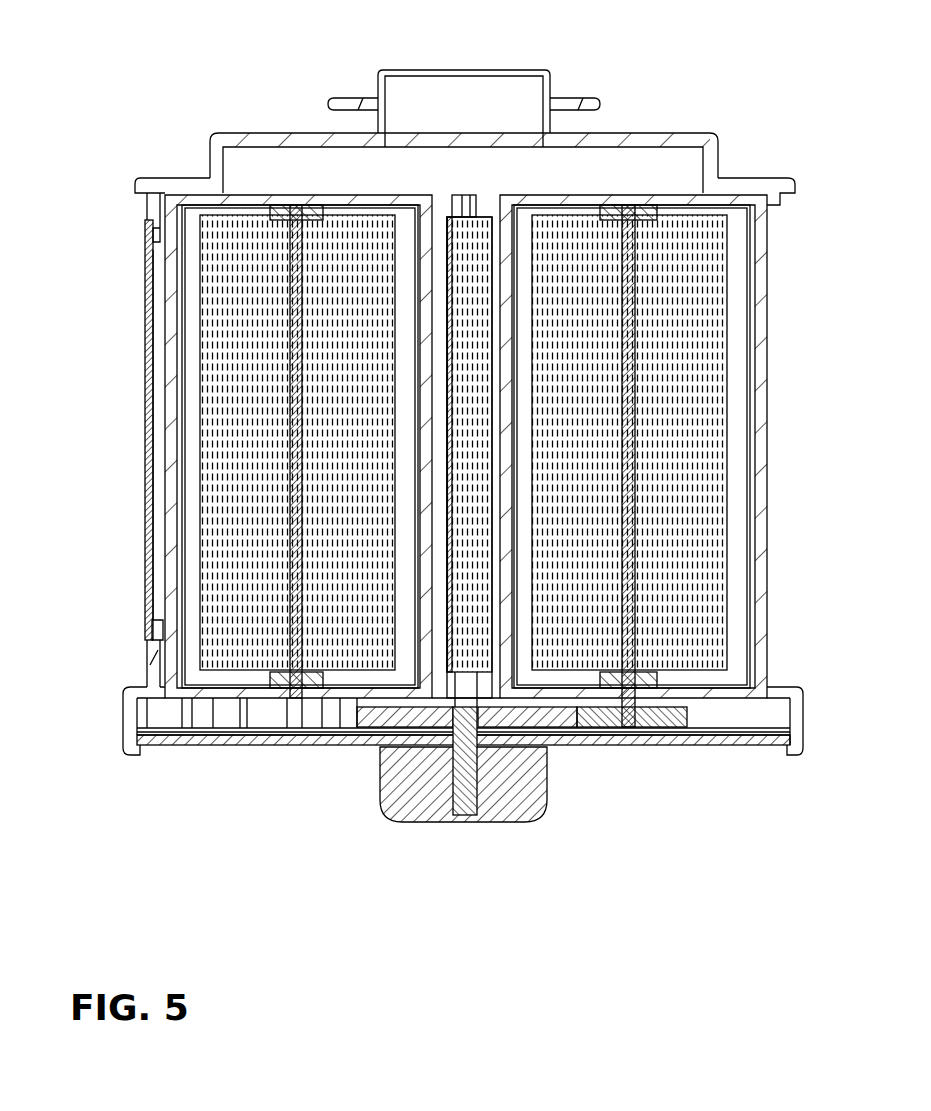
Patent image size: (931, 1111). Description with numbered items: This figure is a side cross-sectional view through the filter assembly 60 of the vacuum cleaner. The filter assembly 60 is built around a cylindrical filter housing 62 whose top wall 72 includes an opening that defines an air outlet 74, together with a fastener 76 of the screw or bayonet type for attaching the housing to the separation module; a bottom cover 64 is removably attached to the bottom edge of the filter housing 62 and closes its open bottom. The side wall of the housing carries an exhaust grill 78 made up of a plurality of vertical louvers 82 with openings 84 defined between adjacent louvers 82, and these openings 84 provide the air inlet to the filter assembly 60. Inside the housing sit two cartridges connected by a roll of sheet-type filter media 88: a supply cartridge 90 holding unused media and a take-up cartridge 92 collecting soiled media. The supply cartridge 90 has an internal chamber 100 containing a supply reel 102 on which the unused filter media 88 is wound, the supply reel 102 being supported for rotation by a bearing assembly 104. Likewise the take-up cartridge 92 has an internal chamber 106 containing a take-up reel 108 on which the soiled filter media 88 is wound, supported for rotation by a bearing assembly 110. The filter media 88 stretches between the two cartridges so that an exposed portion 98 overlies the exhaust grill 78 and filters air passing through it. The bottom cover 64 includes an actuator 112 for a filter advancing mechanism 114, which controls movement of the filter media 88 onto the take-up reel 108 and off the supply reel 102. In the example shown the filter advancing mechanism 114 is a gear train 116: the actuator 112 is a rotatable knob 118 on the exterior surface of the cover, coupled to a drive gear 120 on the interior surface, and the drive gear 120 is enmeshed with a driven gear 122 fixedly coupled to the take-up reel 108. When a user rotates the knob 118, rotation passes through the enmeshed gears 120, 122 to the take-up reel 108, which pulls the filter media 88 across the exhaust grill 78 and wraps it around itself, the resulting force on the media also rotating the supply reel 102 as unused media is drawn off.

The filter assembly 60 is at (96, 66).
The filter housing 62 is at (720, 158).
The bottom cover 64 is at (745, 753).
The top wall 72 is at (252, 133).
The air outlet 74 is at (454, 88).
The fastener 76 is at (347, 99).
The exhaust grill 78 is at (180, 706).
The louvers 82 is at (212, 708).
The openings 84 is at (163, 392).
The filter media 88 is at (215, 570).
The supply cartridge 90 is at (167, 340).
The take-up cartridge 92 is at (758, 295).
The exposed portion 98 is at (478, 195).
The internal chamber 100 is at (414, 246).
The supply reel 102 is at (300, 478).
The bearing assembly 104 is at (268, 215).
The internal chamber 106 is at (512, 241).
The take-up reel 108 is at (628, 430).
The bearing assembly 110 is at (661, 210).
The actuator 112 is at (497, 825).
The filter advancing mechanism 114 is at (600, 735).
The gear train 116 is at (343, 735).
The rotatable knob 118 is at (533, 792).
The drive gear 120 is at (378, 717).
The driven gear 122 is at (667, 732).